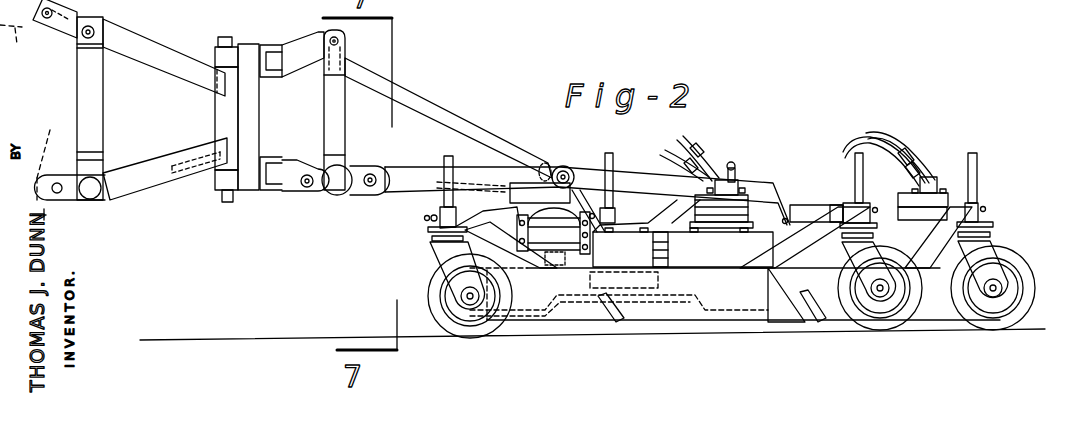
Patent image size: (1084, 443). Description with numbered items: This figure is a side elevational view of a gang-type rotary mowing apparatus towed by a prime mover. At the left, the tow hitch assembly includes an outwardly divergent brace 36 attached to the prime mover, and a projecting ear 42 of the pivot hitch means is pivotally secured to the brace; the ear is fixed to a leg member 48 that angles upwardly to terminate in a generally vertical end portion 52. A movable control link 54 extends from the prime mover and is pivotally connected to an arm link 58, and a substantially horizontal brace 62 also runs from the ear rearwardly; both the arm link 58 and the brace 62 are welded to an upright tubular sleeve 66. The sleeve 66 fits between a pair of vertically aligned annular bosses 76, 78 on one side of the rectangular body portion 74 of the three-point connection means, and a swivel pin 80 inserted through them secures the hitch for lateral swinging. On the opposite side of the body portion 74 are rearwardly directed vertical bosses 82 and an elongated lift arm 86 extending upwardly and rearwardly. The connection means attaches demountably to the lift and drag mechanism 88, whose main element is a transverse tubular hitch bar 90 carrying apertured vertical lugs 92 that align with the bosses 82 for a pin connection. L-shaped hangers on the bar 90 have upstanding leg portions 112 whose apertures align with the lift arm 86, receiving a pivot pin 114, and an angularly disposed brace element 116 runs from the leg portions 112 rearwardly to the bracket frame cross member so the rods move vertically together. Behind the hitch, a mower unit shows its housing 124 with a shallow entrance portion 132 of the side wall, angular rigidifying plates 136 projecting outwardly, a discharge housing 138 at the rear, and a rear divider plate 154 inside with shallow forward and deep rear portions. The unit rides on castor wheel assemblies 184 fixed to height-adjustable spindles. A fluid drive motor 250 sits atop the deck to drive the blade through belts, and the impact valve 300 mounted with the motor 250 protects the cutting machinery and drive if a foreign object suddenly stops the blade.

The brace 36 is at (45, 165).
The projecting ear 42 is at (72, 196).
The leg member 48 is at (97, 105).
The end portion 52 is at (103, 47).
The movable control link 54 is at (17, 45).
The arm link 58 is at (160, 53).
The horizontal brace 62 is at (143, 180).
The tubular sleeve 66 is at (220, 120).
The body portion 74 is at (248, 180).
The annular boss 76 is at (230, 57).
The annular boss 78 is at (220, 180).
The swivel pin 80 is at (227, 200).
The vertical boss 82 is at (290, 184).
The lift arm 86 is at (300, 40).
The lift and drag mechanism 88 is at (100, 26).
The tubular hitch bar 90 is at (337, 188).
The vertical lug 92 is at (307, 188).
The leg portion 112 is at (338, 140).
The pivot pin 114 is at (340, 40).
The brace element 116 is at (420, 110).
The housing 124 is at (587, 112).
The entrance portion 132 is at (705, 113).
The rigidifying plate 136 is at (620, 320).
The discharge housing 138 is at (787, 290).
The rear divider plate 154 is at (722, 297).
The castor wheel assembly 184 is at (993, 242).
The fluid drive motor 250 is at (695, 208).
The impact valve 300 is at (728, 180).